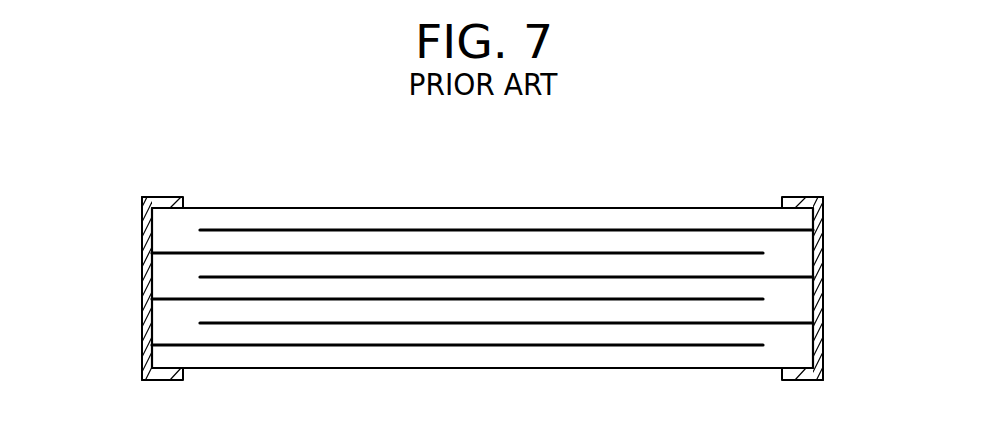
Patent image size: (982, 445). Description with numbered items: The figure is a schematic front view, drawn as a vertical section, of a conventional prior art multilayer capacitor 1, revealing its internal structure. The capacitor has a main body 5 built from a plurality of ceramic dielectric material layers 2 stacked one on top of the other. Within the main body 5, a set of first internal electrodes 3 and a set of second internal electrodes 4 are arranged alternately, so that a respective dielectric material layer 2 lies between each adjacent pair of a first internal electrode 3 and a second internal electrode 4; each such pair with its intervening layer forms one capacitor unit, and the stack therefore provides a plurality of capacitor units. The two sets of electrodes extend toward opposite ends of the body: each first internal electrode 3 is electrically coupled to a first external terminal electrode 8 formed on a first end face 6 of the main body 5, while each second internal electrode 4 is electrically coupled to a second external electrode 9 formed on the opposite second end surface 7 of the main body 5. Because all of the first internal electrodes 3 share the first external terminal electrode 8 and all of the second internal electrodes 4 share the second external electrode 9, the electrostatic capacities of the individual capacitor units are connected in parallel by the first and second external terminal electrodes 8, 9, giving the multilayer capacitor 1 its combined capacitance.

The multilayer capacitor 1 is at (151, 147).
The ceramic dielectric material layer 2 is at (285, 288).
The first internal electrode 3 is at (482, 253).
The second internal electrode 4 is at (360, 322).
The main body 5 is at (465, 184).
The first end face 6 is at (152, 228).
The second end surface 7 is at (812, 248).
The first external terminal electrode 8 is at (142, 305).
The second external electrode 9 is at (133, 255).